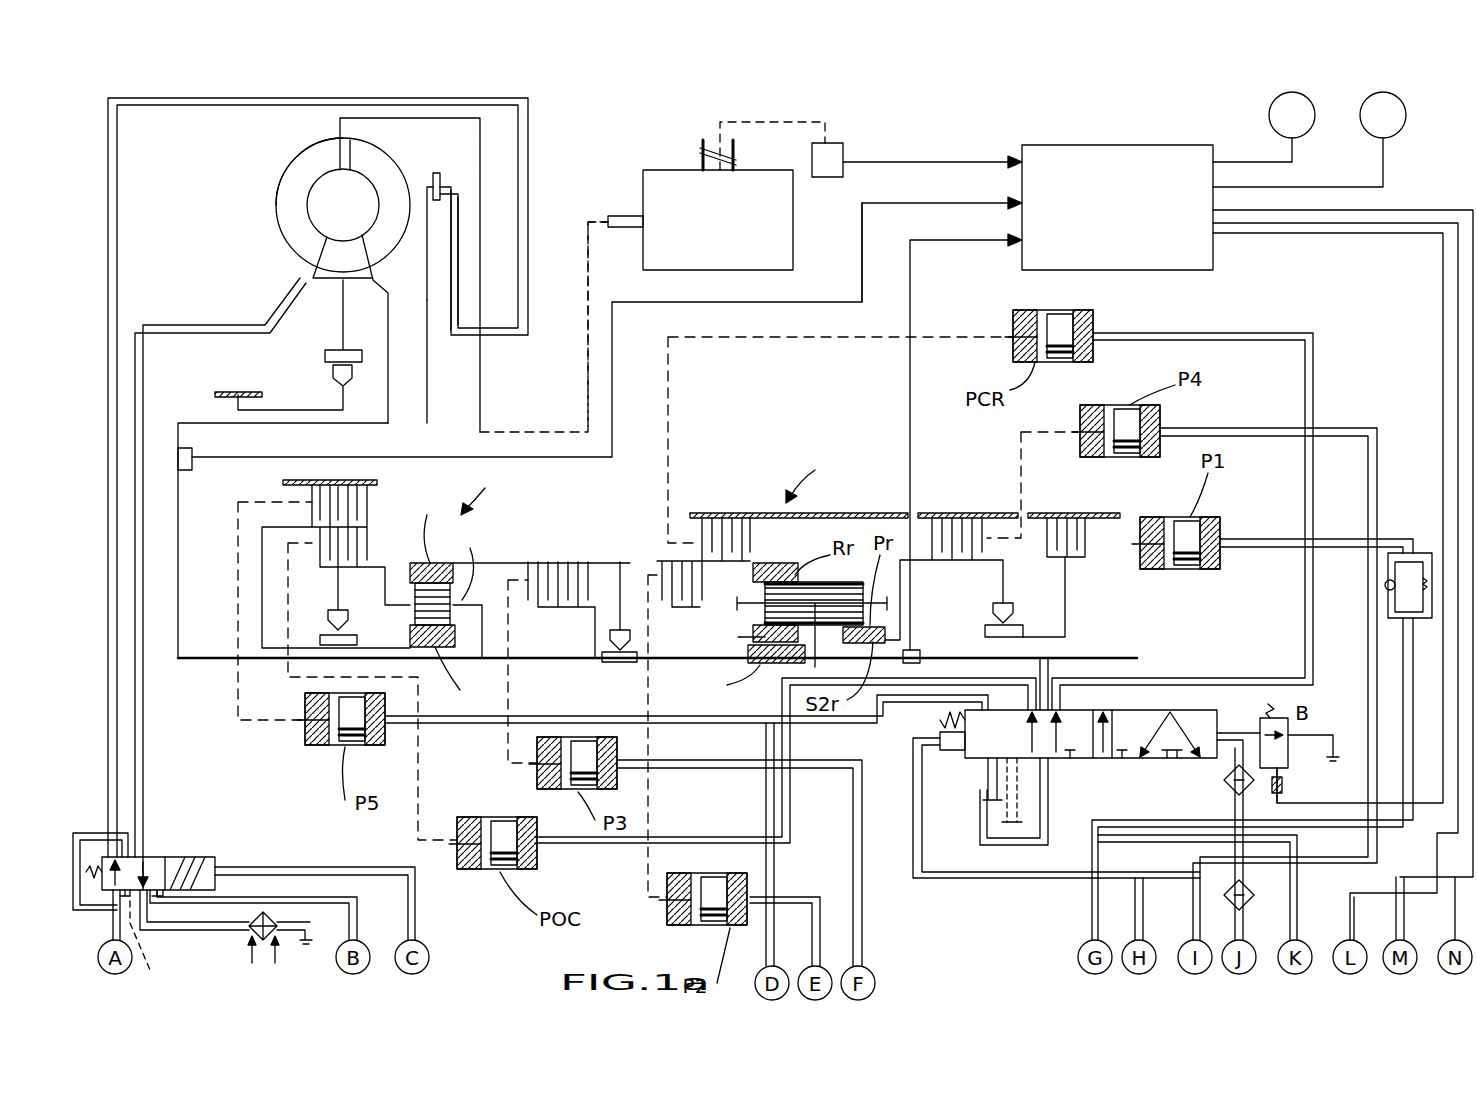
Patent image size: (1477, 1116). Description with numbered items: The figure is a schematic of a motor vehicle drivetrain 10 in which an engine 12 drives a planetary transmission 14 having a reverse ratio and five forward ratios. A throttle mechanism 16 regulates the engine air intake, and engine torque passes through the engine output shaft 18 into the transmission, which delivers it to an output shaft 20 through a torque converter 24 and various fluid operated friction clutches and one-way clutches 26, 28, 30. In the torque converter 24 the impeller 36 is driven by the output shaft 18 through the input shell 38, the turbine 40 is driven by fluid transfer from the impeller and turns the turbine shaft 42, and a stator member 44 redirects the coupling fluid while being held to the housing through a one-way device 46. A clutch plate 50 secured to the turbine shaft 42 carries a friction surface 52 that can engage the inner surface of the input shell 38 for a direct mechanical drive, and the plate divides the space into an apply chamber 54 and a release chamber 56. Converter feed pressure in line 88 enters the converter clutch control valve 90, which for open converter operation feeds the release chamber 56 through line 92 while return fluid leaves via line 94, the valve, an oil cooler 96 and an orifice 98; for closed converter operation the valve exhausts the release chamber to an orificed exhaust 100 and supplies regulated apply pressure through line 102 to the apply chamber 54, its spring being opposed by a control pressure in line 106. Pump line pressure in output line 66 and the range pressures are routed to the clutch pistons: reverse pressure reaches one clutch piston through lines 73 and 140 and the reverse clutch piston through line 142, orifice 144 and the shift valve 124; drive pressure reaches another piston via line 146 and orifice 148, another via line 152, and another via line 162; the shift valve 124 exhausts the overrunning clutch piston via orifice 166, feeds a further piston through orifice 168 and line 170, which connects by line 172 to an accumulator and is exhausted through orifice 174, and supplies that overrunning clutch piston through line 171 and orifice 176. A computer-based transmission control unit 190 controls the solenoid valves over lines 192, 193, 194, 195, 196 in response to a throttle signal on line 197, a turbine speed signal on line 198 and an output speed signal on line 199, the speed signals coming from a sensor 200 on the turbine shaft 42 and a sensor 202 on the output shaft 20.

The motor vehicle drivetrain 10 is at (885, 135).
The engine 12 is at (643, 200).
The planetary transmission 14 is at (682, 489).
The throttle mechanism 16 is at (705, 160).
The engine output shaft 18 is at (628, 228).
The output shaft 20 is at (1137, 660).
The torque converter 24 is at (226, 190).
The one-way clutch 26 is at (333, 645).
The one-way clutch 28 is at (615, 665).
The one-way clutch 30 is at (988, 630).
The impeller 36 is at (290, 222).
The input shell 38 is at (493, 147).
The turbine 40 is at (385, 170).
The turbine shaft 42 is at (193, 422).
The stator member 44 is at (305, 255).
The one-way device 46 is at (330, 375).
The clutch plate 50 is at (427, 235).
The friction surface 52 is at (448, 185).
The apply chamber 54 is at (405, 293).
The release chamber 56 is at (463, 257).
The output line 66 is at (1298, 930).
The line 73 is at (863, 923).
The line 88 is at (110, 930).
The TCC Control Valve 90 is at (160, 857).
The line 92 is at (115, 675).
The line 94 is at (148, 648).
The oil cooler 96 is at (252, 930).
The orifice 98 is at (313, 937).
The orificed exhaust 100 is at (159, 944).
The line 102 is at (300, 898).
The line 106 is at (415, 913).
The Shift Valve 124 is at (1210, 710).
The line 140 is at (845, 770).
The line 142 is at (970, 860).
The orifice 144 is at (1045, 775).
The line 146 is at (1090, 928).
The orifice 148 is at (1420, 570).
The line 152 is at (1193, 917).
The line 162 is at (793, 896).
The orifice 166 is at (1012, 790).
The orifice 168 is at (995, 785).
The line 170 is at (865, 728).
The line 171 is at (780, 700).
The line 172 is at (768, 788).
The orifice 174 is at (990, 800).
The orifice 176 is at (1040, 800).
The Transmission Control Unit 190 is at (1157, 270).
The line 192 is at (1385, 210).
The line 193 is at (1368, 233).
The line 194 is at (1333, 223).
The line 195 is at (1328, 187).
The line 196 is at (1240, 162).
The line 197 is at (960, 160).
The line 198 is at (862, 240).
The line 199 is at (912, 250).
The sensor 200 is at (192, 470).
The sensor 202 is at (920, 657).